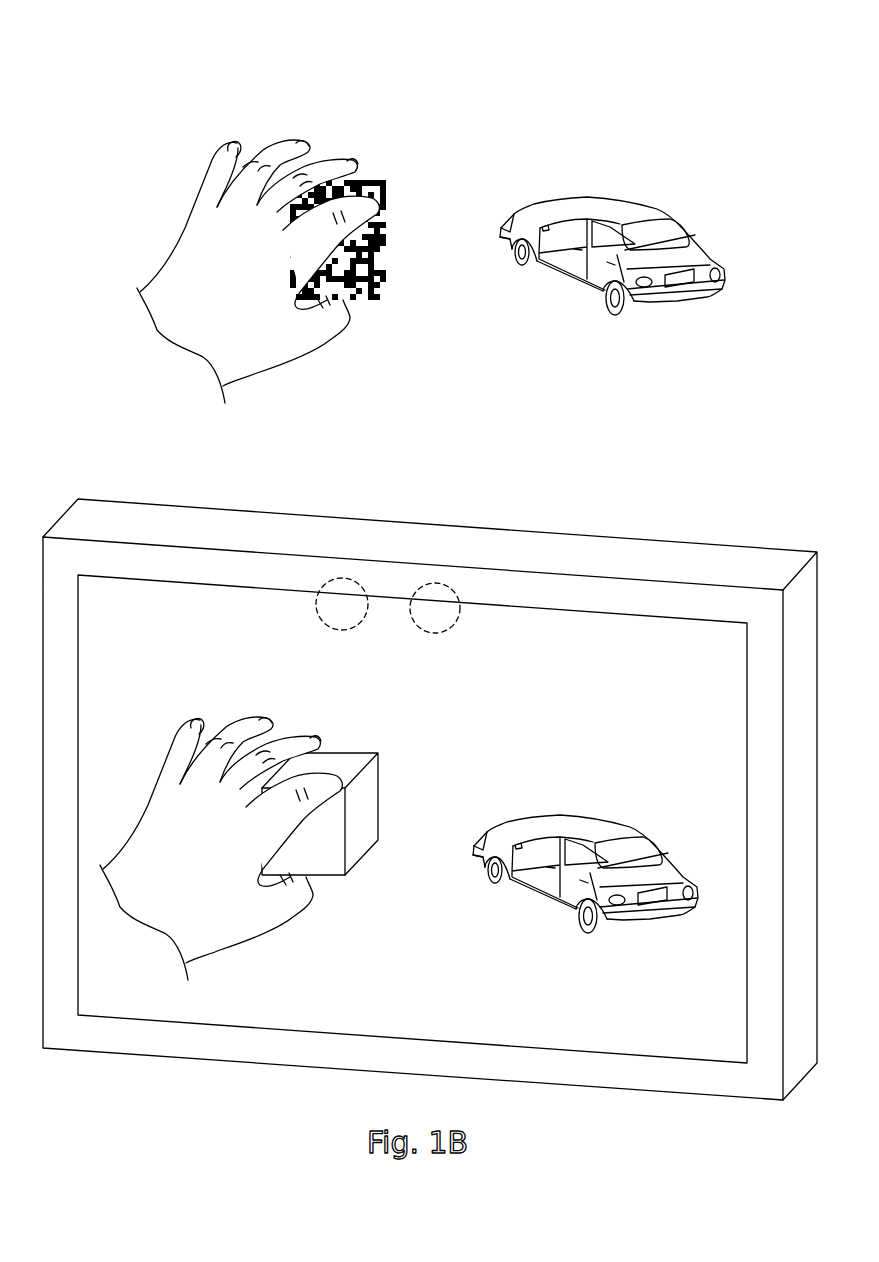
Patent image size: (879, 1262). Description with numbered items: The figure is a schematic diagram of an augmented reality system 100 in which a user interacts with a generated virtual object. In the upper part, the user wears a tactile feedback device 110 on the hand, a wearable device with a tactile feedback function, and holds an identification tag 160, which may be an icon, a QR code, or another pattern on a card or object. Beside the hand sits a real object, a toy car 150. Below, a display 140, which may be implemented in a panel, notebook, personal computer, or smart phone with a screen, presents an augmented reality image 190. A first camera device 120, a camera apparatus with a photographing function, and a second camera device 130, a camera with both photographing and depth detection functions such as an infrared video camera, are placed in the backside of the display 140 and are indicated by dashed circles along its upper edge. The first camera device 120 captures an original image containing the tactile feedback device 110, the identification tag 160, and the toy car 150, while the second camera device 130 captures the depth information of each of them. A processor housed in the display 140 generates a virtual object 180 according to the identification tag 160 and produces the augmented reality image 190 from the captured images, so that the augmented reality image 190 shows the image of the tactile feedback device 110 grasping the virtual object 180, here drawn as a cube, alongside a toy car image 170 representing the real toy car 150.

The augmented reality system 100 is at (62, 42).
The tactile feedback device 110 is at (206, 164).
The first camera device 120 is at (342, 578).
The second camera device 130 is at (436, 583).
The display 140 is at (677, 540).
The toy car 150 is at (657, 207).
The identification tag 160 is at (387, 189).
The toy car image 170 is at (630, 827).
The virtual object 180 is at (379, 754).
The augmented reality image 190 is at (560, 608).